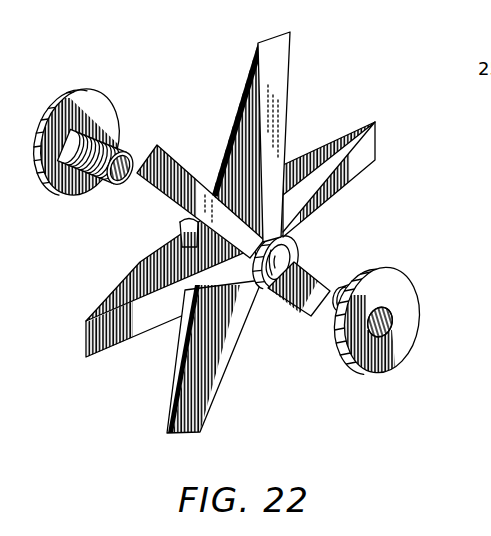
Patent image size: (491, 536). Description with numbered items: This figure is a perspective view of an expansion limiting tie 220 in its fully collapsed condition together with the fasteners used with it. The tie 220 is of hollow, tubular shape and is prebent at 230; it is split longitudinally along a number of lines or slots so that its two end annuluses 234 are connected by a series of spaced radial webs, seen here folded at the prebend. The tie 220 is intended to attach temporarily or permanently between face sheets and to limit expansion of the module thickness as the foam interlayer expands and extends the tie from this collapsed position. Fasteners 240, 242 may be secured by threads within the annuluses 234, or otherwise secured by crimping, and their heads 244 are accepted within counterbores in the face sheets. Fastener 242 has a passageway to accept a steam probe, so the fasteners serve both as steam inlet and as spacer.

The expansion limiting tie 220 is at (262, 216).
The prebend 230 is at (273, 44).
The end annulus 234 is at (181, 227).
The fastener 240 is at (114, 118).
The fastener 242 is at (400, 320).
The fastener head 244 is at (65, 175).